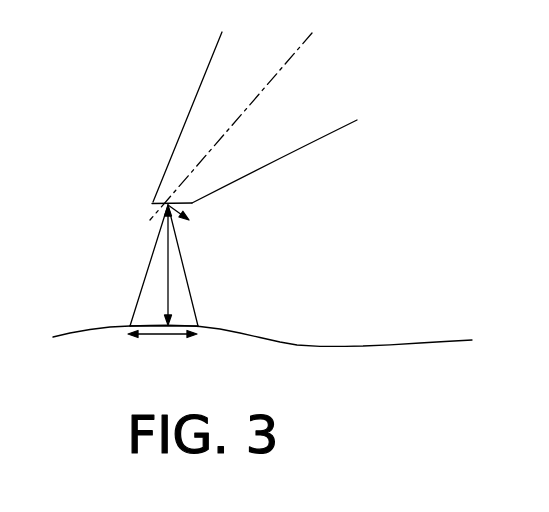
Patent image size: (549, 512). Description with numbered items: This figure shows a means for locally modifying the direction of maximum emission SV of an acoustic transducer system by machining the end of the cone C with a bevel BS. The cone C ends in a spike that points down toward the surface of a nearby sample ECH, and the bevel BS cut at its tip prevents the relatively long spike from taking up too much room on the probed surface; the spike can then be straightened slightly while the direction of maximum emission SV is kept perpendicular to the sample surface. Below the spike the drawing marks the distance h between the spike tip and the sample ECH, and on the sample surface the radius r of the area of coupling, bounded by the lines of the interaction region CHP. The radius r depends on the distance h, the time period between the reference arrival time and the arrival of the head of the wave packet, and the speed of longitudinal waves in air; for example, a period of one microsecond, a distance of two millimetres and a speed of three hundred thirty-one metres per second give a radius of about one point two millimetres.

The direction of maximum emission SV is at (150, 194).
The bevel BS is at (187, 216).
The cone C is at (265, 148).
The coverage footprint (cone-horizon patch) CHP is at (148, 316).
The sample ECH is at (262, 347).
The distance between the spike and the sample h is at (175, 265).
The radius of the area of coupling r is at (162, 345).